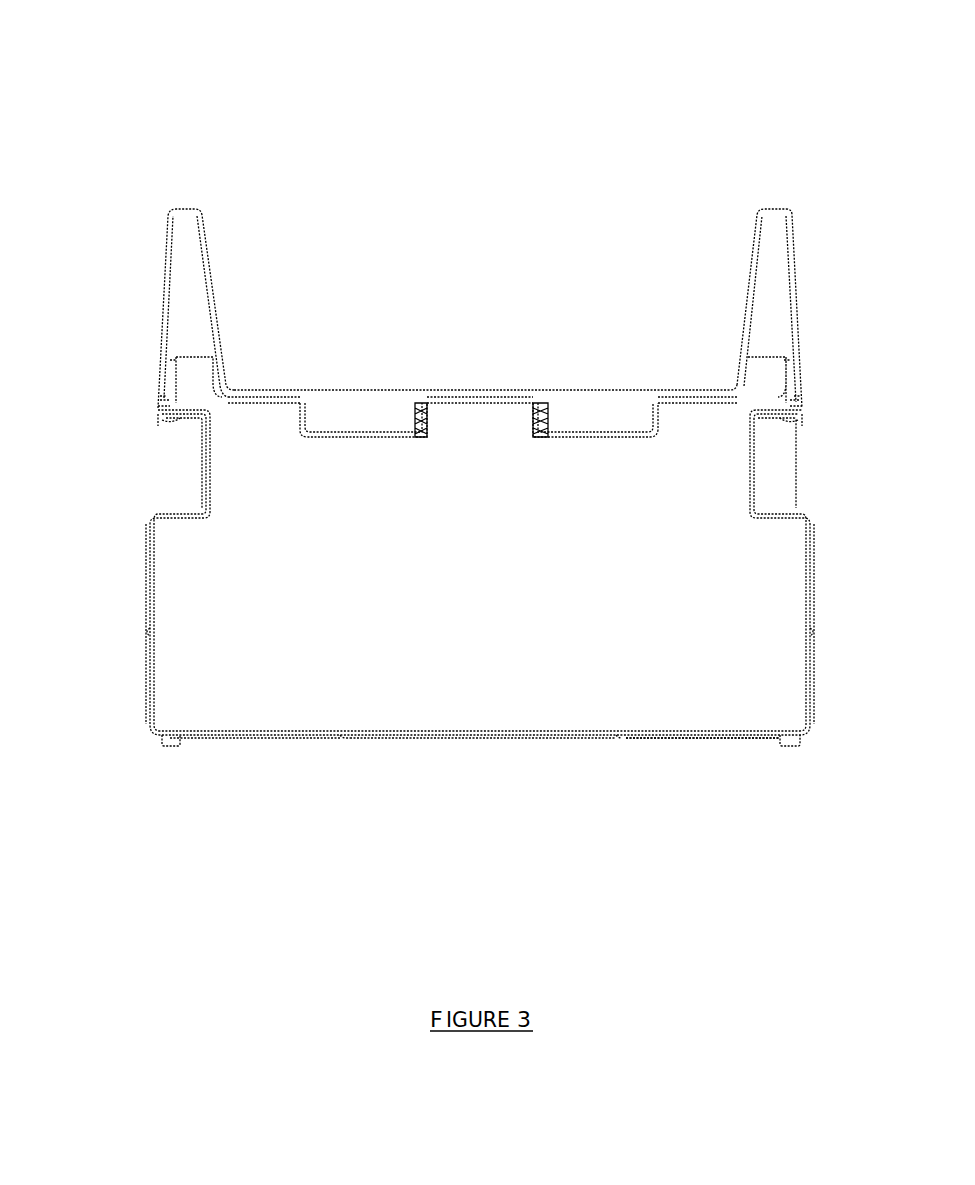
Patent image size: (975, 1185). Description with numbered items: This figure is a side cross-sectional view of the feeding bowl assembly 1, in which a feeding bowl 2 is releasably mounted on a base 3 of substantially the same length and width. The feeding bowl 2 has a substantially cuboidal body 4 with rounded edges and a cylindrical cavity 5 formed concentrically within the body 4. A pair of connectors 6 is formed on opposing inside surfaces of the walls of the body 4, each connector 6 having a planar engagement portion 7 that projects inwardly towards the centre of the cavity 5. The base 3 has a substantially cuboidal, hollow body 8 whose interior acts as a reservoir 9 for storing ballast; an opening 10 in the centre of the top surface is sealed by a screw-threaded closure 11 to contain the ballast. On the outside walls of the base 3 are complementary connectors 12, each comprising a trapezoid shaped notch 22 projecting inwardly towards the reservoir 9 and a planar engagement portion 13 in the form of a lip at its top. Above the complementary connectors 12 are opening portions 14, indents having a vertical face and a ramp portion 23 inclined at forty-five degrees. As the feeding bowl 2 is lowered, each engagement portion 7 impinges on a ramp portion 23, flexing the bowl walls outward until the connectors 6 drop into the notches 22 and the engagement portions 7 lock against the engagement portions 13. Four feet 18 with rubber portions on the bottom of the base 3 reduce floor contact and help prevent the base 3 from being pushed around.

The feeding bowl assembly 1 is at (135, 122).
The feeding bowl 2 is at (790, 197).
The base 3 is at (380, 750).
The body 4 is at (768, 208).
The cylindrical cavity 5 is at (592, 294).
The connector 6 is at (148, 428).
The planar engagement portion 7 is at (165, 417).
The body 8 is at (703, 735).
The reservoir 9 is at (540, 700).
The opening 10 is at (422, 405).
The closure 11 is at (530, 400).
The complementary connector 12 is at (167, 400).
The planar engagement portion 13 is at (163, 412).
The opening portion 14 is at (175, 363).
The feet 18 is at (172, 743).
The notch 22 is at (172, 470).
The ramp portion 23 is at (170, 403).